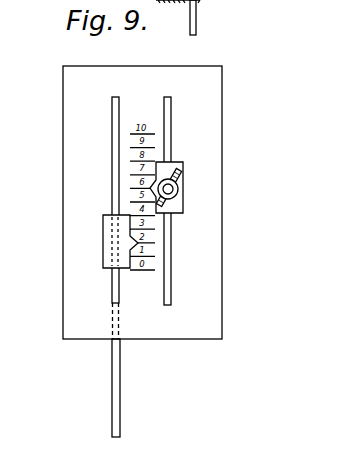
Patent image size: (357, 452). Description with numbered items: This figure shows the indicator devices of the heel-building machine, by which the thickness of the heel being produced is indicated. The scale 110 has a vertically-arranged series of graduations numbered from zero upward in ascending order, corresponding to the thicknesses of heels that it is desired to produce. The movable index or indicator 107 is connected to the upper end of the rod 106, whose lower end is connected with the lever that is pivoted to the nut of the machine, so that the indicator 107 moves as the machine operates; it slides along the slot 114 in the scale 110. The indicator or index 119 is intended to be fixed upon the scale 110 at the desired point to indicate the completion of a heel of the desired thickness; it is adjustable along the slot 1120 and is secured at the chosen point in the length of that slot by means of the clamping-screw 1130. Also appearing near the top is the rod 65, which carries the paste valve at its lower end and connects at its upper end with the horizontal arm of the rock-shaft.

The rod 65 is at (203, 18).
The scale 110 is at (151, 66).
The slot 114 is at (105, 113).
The rod 106 is at (106, 401).
The slot 1120 is at (181, 106).
The movable index or indicator 107 is at (99, 238).
The indicator or index 119 is at (192, 175).
The clamping-screw 1130 is at (186, 178).